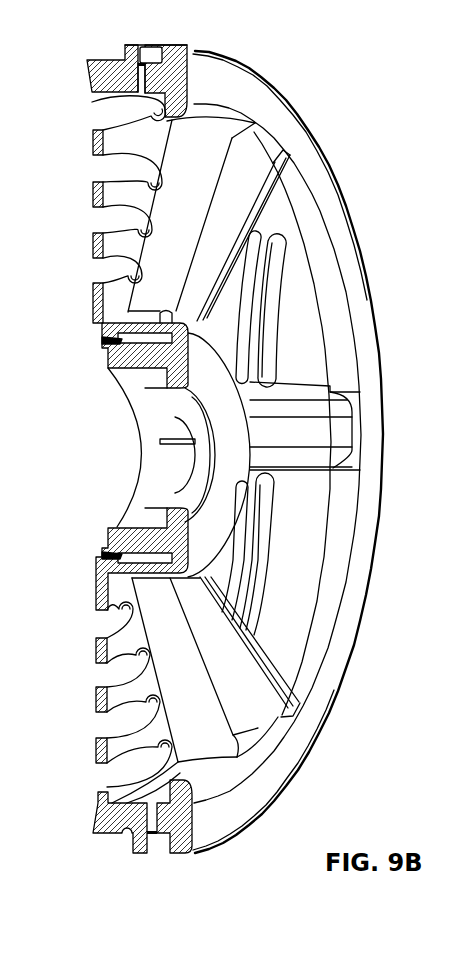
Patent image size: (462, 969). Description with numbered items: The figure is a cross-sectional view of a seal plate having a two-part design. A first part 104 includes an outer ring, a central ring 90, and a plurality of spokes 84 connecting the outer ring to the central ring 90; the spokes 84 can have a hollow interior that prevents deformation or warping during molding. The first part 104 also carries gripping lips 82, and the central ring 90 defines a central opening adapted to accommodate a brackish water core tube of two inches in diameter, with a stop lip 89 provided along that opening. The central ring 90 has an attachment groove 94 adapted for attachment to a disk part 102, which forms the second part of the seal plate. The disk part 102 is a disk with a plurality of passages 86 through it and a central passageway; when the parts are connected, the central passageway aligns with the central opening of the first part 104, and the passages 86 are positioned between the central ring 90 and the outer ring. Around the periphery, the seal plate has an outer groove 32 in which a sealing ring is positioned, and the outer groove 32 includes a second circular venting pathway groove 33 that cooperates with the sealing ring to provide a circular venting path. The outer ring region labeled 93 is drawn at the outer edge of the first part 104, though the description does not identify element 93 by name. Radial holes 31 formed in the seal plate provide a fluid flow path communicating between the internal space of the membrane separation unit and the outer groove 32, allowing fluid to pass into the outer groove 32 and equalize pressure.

The radial holes 31 is at (143, 75).
The outer groove 32 is at (152, 50).
The second circular venting pathway groove 33 is at (143, 44).
The gripping lips 82 is at (85, 113).
The spokes 84 is at (195, 204).
The passages 86 is at (120, 172).
The stop lip 89 is at (202, 420).
The central ring 90 is at (222, 382).
The rim 93 is at (347, 250).
The attachment groove 94 is at (127, 372).
The disk part 102 is at (100, 305).
The first part 104 is at (362, 625).